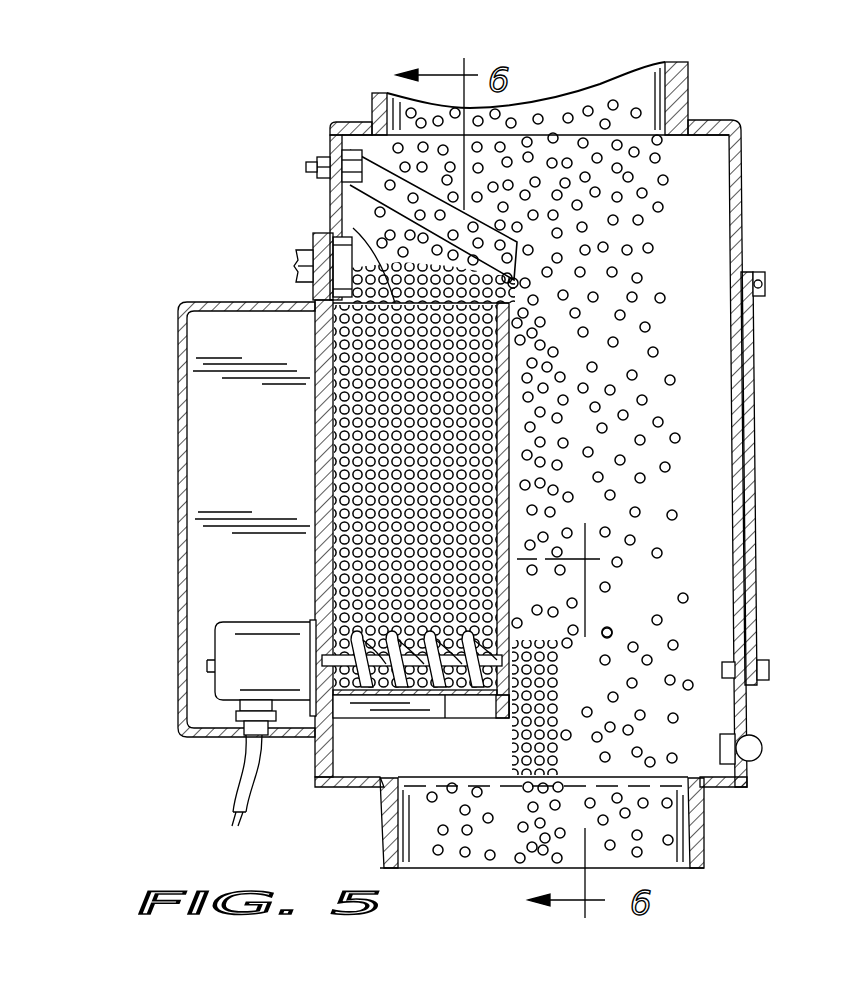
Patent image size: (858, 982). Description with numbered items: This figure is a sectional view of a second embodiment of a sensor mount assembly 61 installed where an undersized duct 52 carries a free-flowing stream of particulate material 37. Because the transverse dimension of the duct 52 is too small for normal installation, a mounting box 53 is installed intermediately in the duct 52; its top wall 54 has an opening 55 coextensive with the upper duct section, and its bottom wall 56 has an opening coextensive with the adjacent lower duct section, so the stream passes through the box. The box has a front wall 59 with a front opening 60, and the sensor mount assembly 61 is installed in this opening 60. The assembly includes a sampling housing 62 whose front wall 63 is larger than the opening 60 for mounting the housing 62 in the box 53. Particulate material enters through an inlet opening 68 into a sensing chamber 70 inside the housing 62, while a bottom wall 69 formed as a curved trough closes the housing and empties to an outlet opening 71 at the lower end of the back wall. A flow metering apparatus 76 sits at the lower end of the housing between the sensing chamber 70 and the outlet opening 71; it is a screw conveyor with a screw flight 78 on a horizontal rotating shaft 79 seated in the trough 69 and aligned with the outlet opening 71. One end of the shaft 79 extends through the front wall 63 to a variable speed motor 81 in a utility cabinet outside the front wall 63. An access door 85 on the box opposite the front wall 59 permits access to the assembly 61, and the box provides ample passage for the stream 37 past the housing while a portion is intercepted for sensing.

The particulate material 37 is at (680, 268).
The duct 52 is at (692, 84).
The mounting box 53 is at (756, 188).
The top wall 54 is at (350, 120).
The opening 55 is at (632, 140).
The bottom wall 56 is at (718, 792).
The front wall 59 is at (330, 186).
The front opening 60 is at (326, 300).
The sensor mount assembly 61 is at (210, 752).
The sampling housing 62 is at (300, 586).
The front wall 63 is at (326, 478).
The inlet opening 68 is at (345, 250).
The bottom wall 69 is at (455, 700).
The sensing chamber 70 is at (375, 425).
The outlet opening 71 is at (468, 678).
The flow metering apparatus 76 is at (300, 722).
The screw flight 78 is at (440, 620).
The rotating shaft 79 is at (508, 650).
The variable speed motor 81 is at (245, 647).
The access door 85 is at (754, 482).